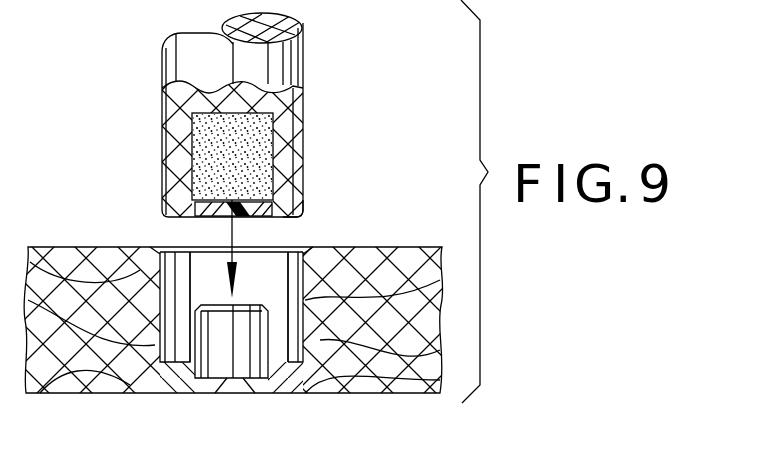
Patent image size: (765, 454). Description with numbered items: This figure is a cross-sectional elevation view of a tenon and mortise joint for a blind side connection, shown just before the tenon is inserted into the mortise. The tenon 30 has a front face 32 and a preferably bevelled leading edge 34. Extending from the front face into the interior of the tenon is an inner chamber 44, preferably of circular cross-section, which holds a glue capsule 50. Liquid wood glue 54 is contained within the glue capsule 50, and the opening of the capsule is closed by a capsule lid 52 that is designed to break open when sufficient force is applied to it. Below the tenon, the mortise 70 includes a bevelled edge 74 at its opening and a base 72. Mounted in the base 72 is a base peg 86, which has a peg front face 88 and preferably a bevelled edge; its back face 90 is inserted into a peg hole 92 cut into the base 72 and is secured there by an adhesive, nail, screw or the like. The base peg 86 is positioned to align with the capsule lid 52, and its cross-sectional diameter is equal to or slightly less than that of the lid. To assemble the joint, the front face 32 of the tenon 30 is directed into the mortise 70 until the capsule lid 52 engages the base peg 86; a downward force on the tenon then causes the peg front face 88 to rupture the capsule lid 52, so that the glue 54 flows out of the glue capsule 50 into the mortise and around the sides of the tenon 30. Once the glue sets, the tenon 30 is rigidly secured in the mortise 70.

The tenon 30 is at (160, 60).
The glue capsule 50 is at (268, 119).
The capsule lid 52 is at (178, 178).
The inner chamber 44 is at (192, 128).
The liquid wood glue 54 is at (248, 158).
The leading edge 34 is at (285, 202).
The front face 32 is at (283, 217).
The mortise 70 is at (182, 320).
The base 72 is at (283, 361).
The bevelled edge 74 is at (160, 243).
The base peg 86 is at (243, 333).
The peg front face 88 is at (228, 307).
The back face 90 is at (235, 381).
The peg hole 92 is at (268, 372).